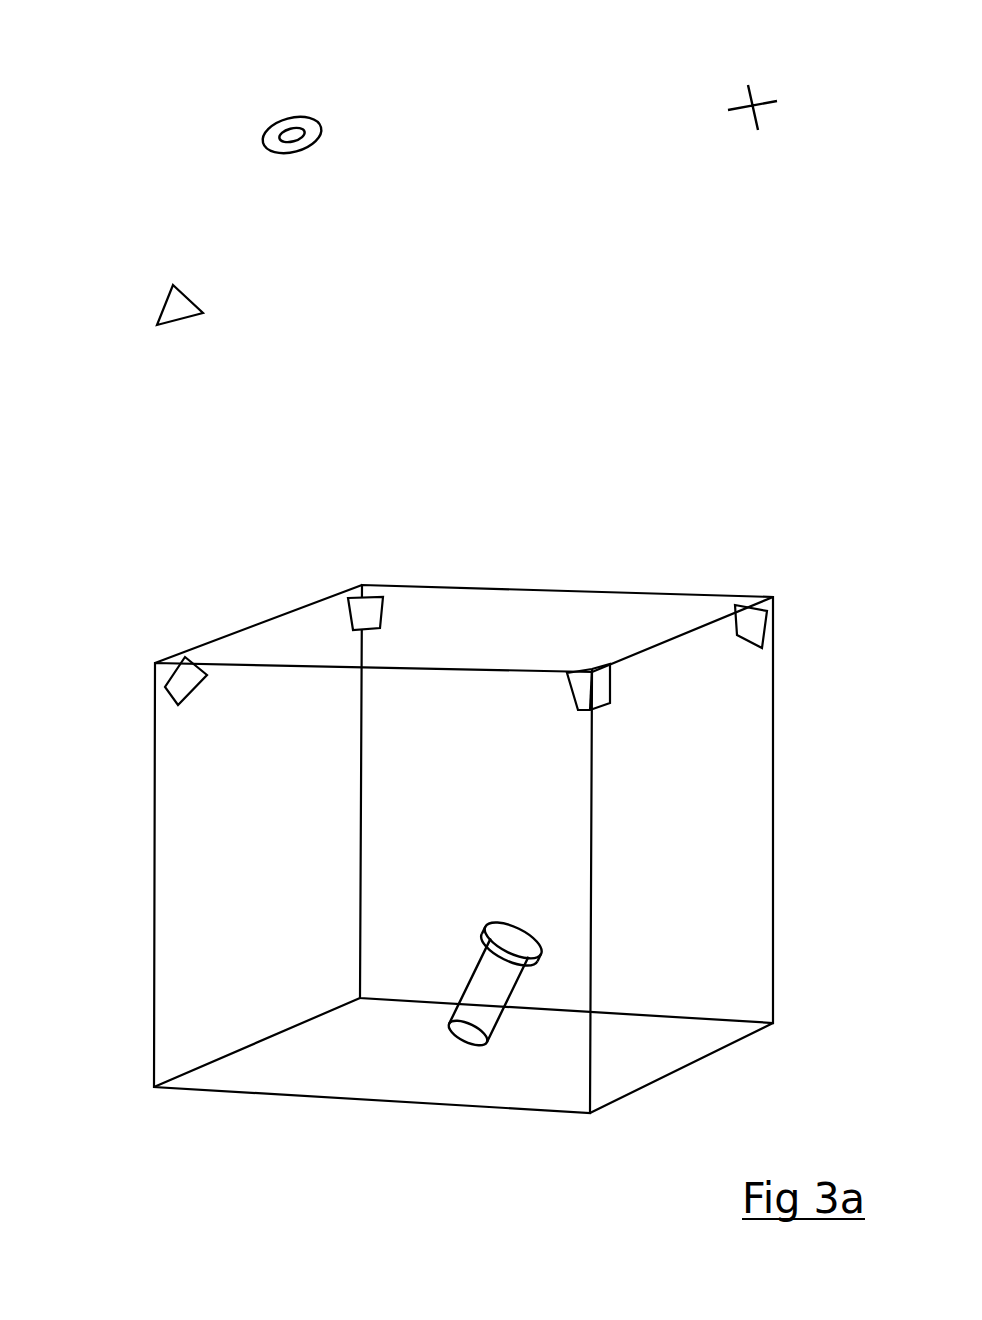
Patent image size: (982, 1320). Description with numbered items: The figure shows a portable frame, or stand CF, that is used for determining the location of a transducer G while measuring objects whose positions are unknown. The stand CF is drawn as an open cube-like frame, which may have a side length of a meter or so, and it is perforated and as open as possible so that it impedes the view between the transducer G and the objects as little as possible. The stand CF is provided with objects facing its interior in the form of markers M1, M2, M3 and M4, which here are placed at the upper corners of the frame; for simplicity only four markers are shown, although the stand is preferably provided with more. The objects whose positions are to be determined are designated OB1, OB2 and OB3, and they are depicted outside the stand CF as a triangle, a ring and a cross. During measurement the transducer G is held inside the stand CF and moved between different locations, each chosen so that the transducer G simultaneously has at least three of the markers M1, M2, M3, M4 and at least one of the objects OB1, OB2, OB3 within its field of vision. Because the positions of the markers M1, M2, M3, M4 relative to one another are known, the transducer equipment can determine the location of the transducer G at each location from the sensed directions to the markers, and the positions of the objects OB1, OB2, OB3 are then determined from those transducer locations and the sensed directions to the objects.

The object OB1 is at (155, 296).
The object OB2 is at (268, 112).
The object OB3 is at (730, 80).
The stand CF is at (155, 962).
The marker M1 is at (187, 673).
The marker M2 is at (375, 608).
The marker M3 is at (750, 632).
The marker M4 is at (603, 688).
The transducer G is at (462, 975).